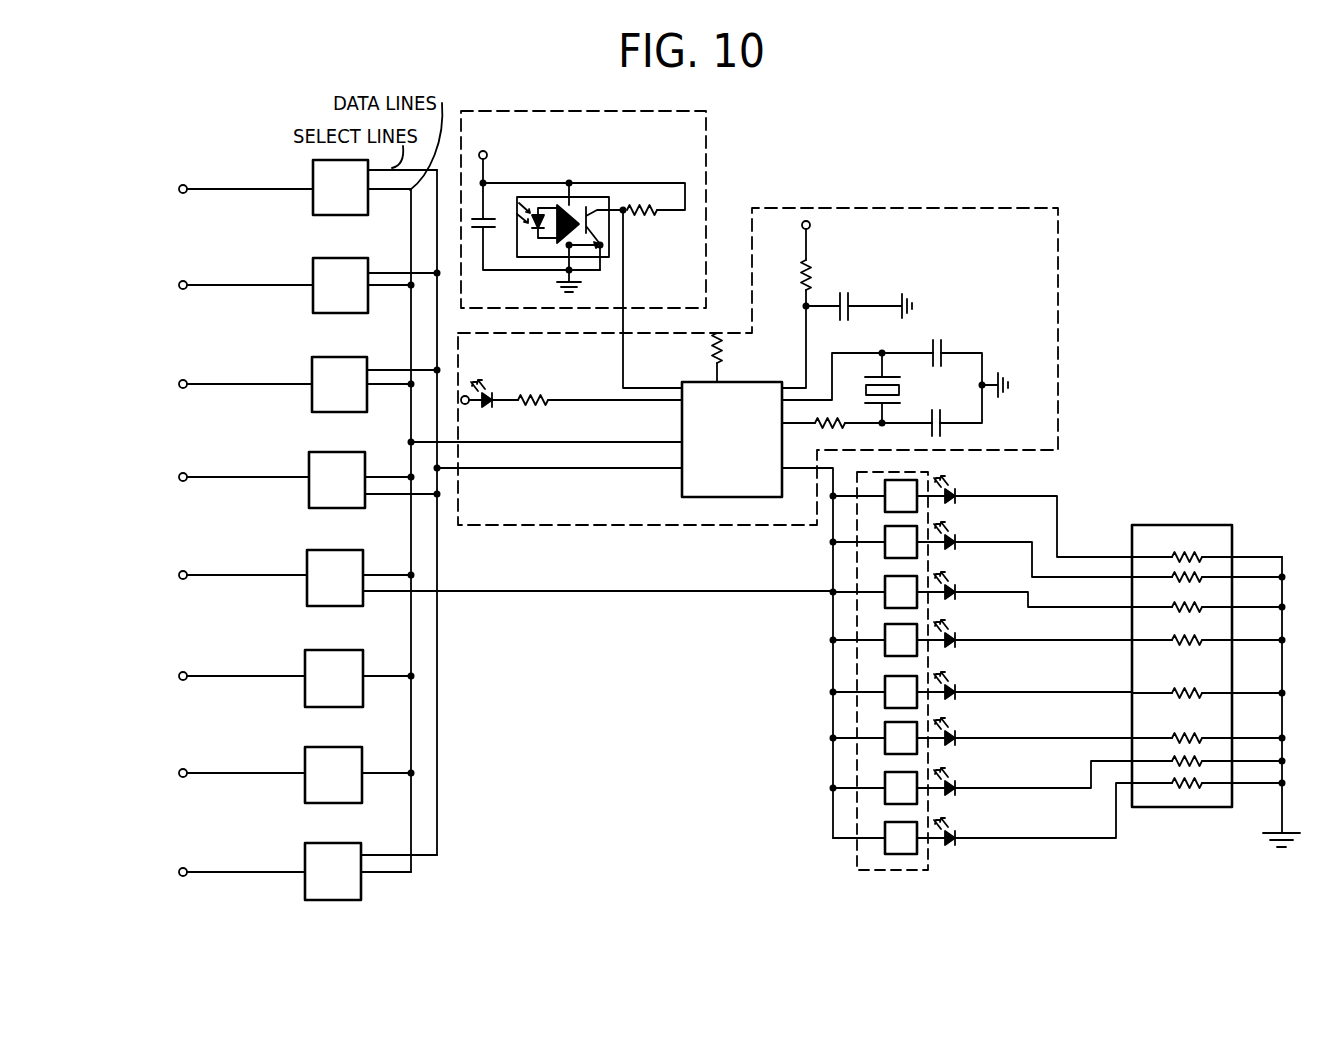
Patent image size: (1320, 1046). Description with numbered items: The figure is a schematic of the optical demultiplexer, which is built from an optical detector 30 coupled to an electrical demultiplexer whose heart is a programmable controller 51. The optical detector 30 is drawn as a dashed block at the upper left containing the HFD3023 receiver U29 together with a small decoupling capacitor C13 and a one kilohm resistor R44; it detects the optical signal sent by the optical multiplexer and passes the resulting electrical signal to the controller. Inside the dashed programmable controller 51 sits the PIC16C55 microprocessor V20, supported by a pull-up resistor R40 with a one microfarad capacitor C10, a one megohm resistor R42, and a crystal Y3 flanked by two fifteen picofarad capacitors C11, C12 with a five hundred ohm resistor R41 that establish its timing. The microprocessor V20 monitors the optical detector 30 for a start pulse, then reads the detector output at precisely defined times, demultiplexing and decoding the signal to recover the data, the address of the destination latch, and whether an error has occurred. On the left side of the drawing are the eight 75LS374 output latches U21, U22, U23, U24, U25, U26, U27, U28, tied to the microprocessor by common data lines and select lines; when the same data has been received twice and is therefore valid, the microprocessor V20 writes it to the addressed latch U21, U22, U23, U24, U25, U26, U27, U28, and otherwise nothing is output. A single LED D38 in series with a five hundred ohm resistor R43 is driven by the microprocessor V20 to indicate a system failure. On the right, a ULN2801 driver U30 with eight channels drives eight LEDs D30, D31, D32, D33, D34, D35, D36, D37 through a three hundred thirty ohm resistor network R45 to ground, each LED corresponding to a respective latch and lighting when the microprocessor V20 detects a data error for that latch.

The output latch U21 is at (308, 187).
The output latch U22 is at (310, 285).
The output latch U23 is at (310, 384).
The output latch U24 is at (310, 480).
The output latch U25 is at (506, 578).
The output latch U26 is at (297, 678).
The output latch U27 is at (297, 775).
The output latch U28 is at (308, 871).
The optical detector 30 is at (697, 111).
The optical detector component U29 is at (587, 196).
The capacitor C13 is at (473, 210).
The resistor R44 is at (651, 229).
The programmable controller 51 is at (922, 208).
The resistor R40 is at (788, 304).
The capacitor C10 is at (859, 294).
The resistor R42 is at (742, 357).
The microprocessor V20 is at (732, 439).
The LED D38 is at (490, 376).
The resistor R43 is at (587, 385).
The capacitor C12 is at (961, 347).
The crystal Y3 is at (898, 388).
The capacitor C11 is at (960, 417).
The resistor R41 is at (834, 435).
The driver U30 is at (928, 870).
The LED D30 is at (1033, 513).
The LED D31 is at (1033, 547).
The LED D32 is at (1033, 587).
The LED D33 is at (1033, 631).
The LED D34 is at (1033, 682).
The LED D35 is at (1033, 729).
The LED D36 is at (1033, 778).
The LED D37 is at (1033, 814).
The resistor R45 is at (1191, 525).